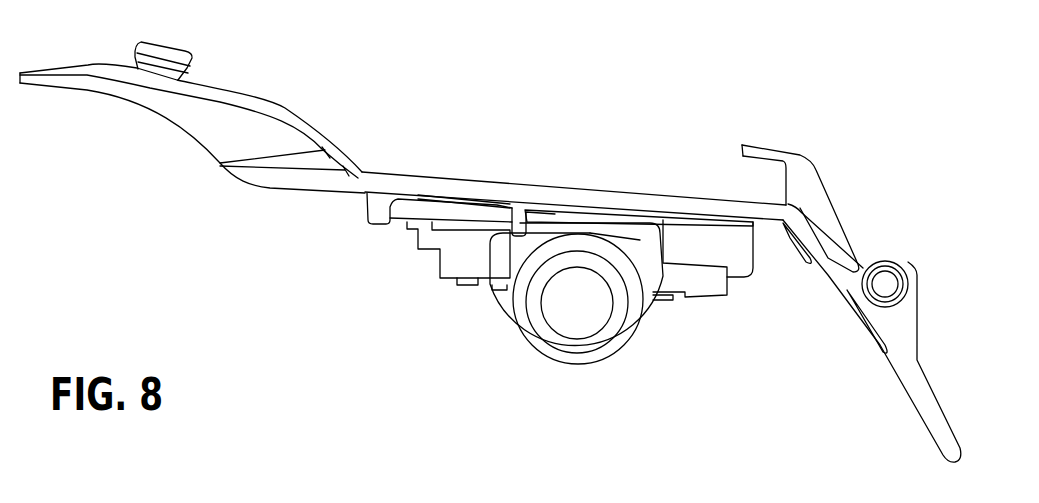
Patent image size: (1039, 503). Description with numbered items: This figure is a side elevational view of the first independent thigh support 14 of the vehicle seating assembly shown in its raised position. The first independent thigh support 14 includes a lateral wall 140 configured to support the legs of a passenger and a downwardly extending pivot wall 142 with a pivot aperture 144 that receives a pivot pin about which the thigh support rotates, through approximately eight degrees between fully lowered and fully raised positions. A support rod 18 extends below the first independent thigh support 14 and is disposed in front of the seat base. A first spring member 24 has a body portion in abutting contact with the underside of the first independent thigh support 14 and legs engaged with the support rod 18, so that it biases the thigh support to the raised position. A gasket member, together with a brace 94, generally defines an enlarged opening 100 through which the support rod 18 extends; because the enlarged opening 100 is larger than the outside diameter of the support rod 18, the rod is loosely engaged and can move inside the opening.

The first independent thigh support 14 is at (372, 173).
The first spring member 24 is at (450, 213).
The lateral wall 140 is at (528, 182).
The brace 94 is at (678, 280).
The enlarged opening 100 is at (640, 262).
The support rod 18 is at (542, 323).
The pivot wall 142 is at (918, 380).
The pivot aperture 144 is at (897, 272).